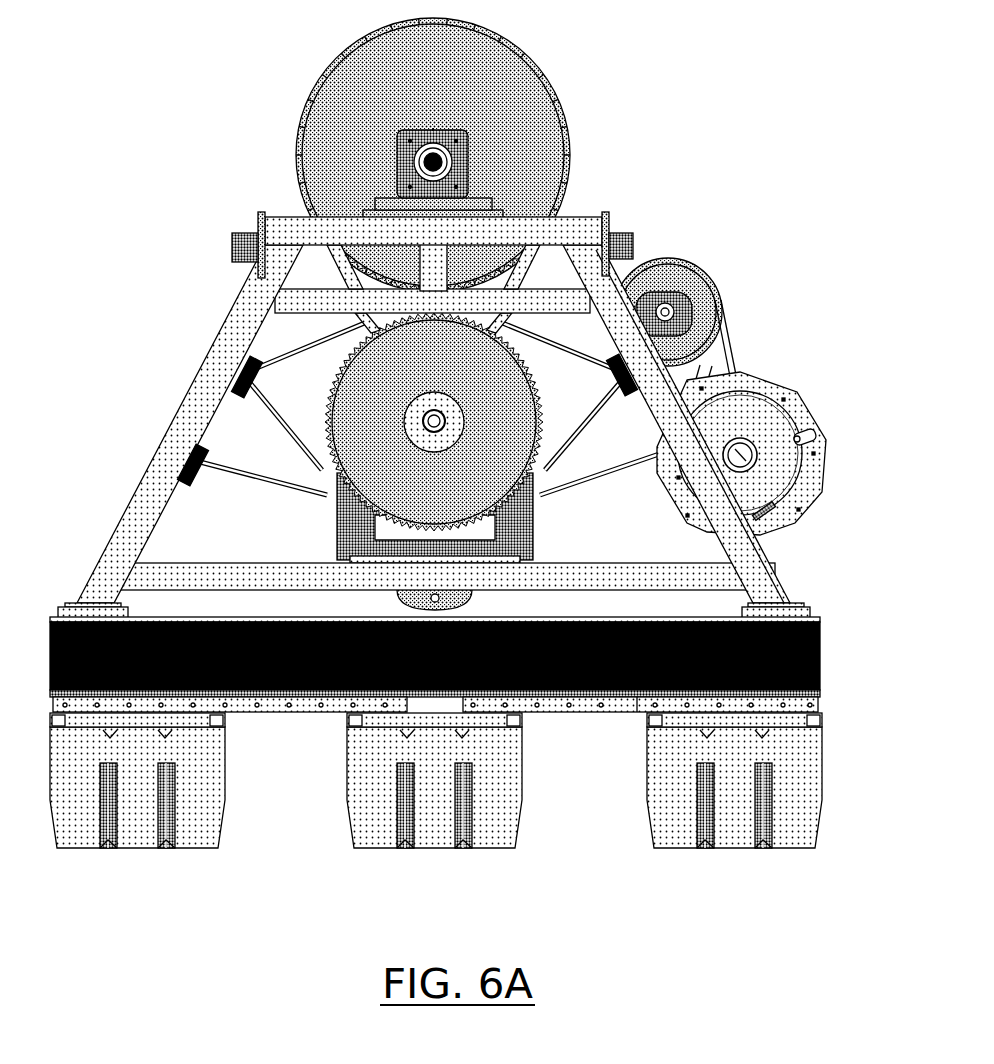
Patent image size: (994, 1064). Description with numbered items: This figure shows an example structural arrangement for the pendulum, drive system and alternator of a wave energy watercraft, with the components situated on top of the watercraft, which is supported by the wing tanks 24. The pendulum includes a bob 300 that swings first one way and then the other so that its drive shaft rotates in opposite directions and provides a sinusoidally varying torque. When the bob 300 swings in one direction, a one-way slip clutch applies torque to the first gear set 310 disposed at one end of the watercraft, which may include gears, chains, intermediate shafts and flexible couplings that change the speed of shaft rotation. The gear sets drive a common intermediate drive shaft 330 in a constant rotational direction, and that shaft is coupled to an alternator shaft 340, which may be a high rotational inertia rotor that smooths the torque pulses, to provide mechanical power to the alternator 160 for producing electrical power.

The first gear set 310 is at (369, 155).
The bob 300 is at (397, 597).
The common intermediate drive shaft 330 is at (703, 327).
The alternator 160 is at (775, 440).
The alternator shaft 340 is at (794, 490).
The wing tanks 24 is at (436, 796).